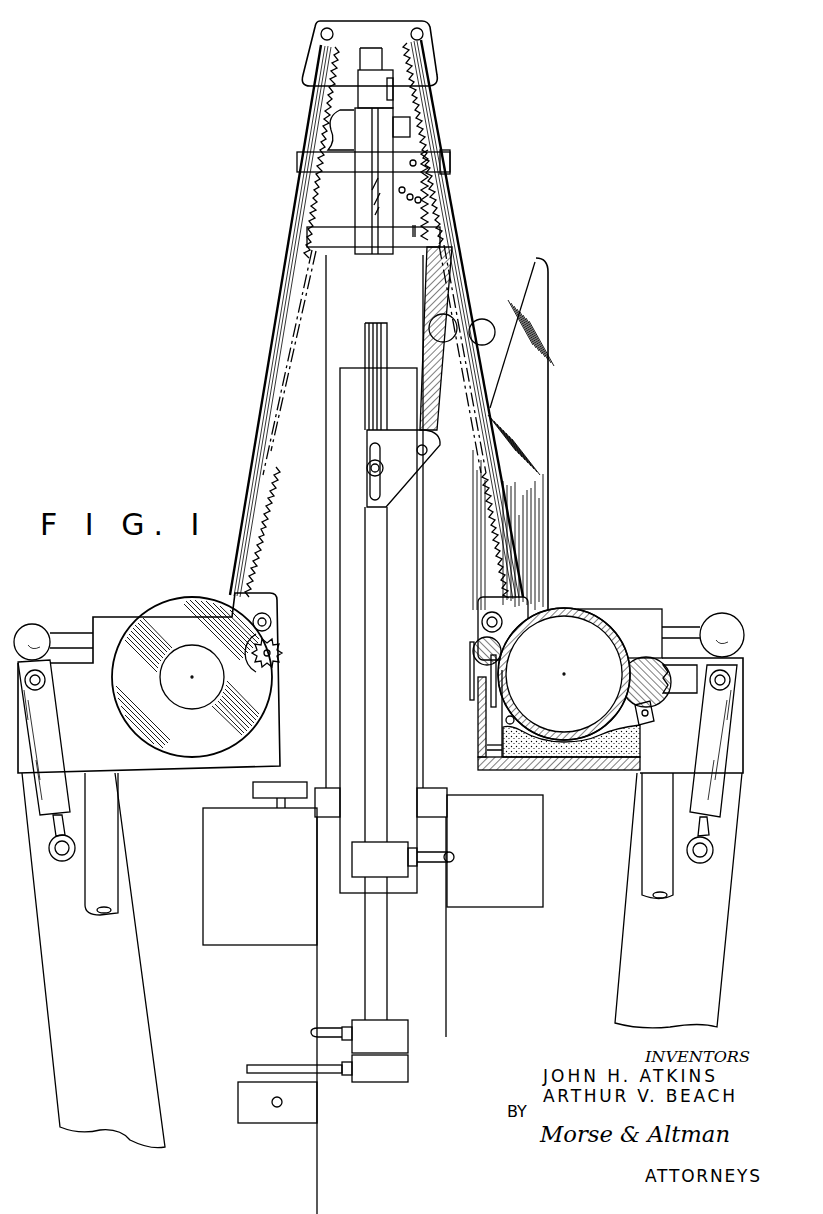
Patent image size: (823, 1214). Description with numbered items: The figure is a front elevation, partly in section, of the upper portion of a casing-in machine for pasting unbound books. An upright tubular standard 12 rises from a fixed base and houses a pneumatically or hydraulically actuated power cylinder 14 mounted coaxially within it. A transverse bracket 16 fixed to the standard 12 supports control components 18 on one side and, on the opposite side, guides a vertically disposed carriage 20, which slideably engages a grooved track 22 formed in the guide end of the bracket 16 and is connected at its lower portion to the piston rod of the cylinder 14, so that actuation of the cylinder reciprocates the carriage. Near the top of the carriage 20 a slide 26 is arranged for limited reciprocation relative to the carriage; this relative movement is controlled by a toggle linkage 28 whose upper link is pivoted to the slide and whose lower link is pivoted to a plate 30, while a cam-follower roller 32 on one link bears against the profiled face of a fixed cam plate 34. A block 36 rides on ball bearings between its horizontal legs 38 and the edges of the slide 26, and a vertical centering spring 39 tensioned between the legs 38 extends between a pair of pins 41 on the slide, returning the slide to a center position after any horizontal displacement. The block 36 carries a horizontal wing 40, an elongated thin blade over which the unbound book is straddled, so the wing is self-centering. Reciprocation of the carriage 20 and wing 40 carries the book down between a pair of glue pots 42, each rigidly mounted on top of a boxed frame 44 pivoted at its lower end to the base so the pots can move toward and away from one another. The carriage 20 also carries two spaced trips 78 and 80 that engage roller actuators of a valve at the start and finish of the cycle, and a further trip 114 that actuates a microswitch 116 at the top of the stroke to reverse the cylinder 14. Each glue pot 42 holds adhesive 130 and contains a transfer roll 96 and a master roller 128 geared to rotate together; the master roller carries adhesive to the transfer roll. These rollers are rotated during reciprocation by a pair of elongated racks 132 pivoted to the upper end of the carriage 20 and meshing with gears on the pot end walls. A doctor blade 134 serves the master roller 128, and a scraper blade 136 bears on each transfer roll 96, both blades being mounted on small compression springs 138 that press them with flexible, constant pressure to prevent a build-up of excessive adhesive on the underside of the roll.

The tubular standard 12 is at (448, 994).
The power cylinder 14 is at (327, 507).
The transverse bracket 16 is at (565, 882).
The control components 18 is at (520, 794).
The carriage 20 is at (345, 468).
The grooved track 22 is at (427, 786).
The slide 26 is at (446, 158).
The toggle linkage 28 is at (447, 316).
The plate 30 is at (436, 478).
The roller 32 is at (482, 320).
The fixed cam plate 34 is at (550, 375).
The block 36 is at (430, 214).
The legs 38 is at (297, 162).
The centering spring 39 is at (416, 164).
The wing 40 is at (375, 215).
The pins 41 is at (412, 196).
The glue pots 42 is at (162, 773).
The boxed frame 44 is at (615, 979).
The trip 78 is at (452, 858).
The trip 80 is at (312, 1032).
The transfer roll 96 is at (477, 643).
The trip 114 is at (265, 1063).
The microswitch 116 is at (238, 1098).
The master roller 128 is at (583, 614).
The adhesive 130 is at (640, 731).
The racks 132 is at (280, 311).
The doctor blade 134 is at (498, 744).
The scraper blade 136 is at (480, 688).
The compression springs 138 is at (489, 709).